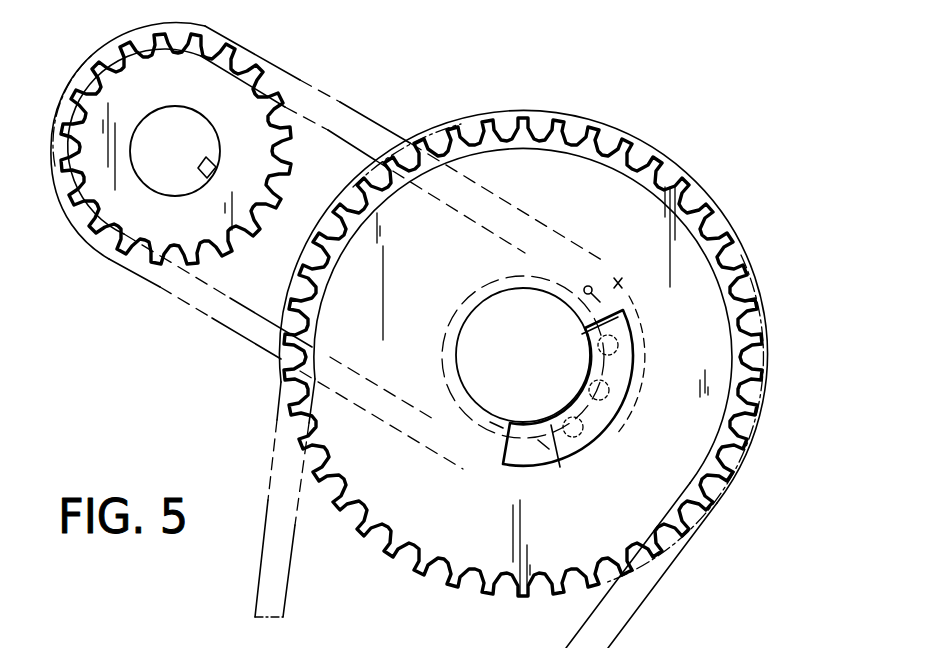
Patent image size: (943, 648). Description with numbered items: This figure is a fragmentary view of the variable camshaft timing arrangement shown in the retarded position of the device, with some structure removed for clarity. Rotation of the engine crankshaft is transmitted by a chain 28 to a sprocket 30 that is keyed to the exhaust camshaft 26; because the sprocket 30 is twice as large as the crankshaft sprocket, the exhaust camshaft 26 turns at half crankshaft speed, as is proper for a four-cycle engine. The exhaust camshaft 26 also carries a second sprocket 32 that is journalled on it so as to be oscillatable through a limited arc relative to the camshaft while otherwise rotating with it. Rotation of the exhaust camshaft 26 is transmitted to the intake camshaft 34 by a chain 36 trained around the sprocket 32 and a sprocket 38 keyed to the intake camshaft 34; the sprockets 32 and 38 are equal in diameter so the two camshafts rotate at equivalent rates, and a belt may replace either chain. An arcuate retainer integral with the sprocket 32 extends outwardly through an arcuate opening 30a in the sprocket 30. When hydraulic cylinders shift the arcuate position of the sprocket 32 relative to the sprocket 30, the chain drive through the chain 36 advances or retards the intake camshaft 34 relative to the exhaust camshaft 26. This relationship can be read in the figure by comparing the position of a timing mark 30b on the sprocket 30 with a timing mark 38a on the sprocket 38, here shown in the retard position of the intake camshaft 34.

The exhaust camshaft 26 is at (553, 323).
The chain 28 is at (622, 594).
The sprocket 30 is at (722, 382).
The arcuate opening 30a is at (543, 443).
The timing mark 30b is at (524, 148).
The sprocket 32 is at (613, 281).
The intake camshaft 34 is at (154, 167).
The chain 36 is at (368, 132).
The sprocket 38 is at (233, 110).
The timing mark 38a is at (222, 67).